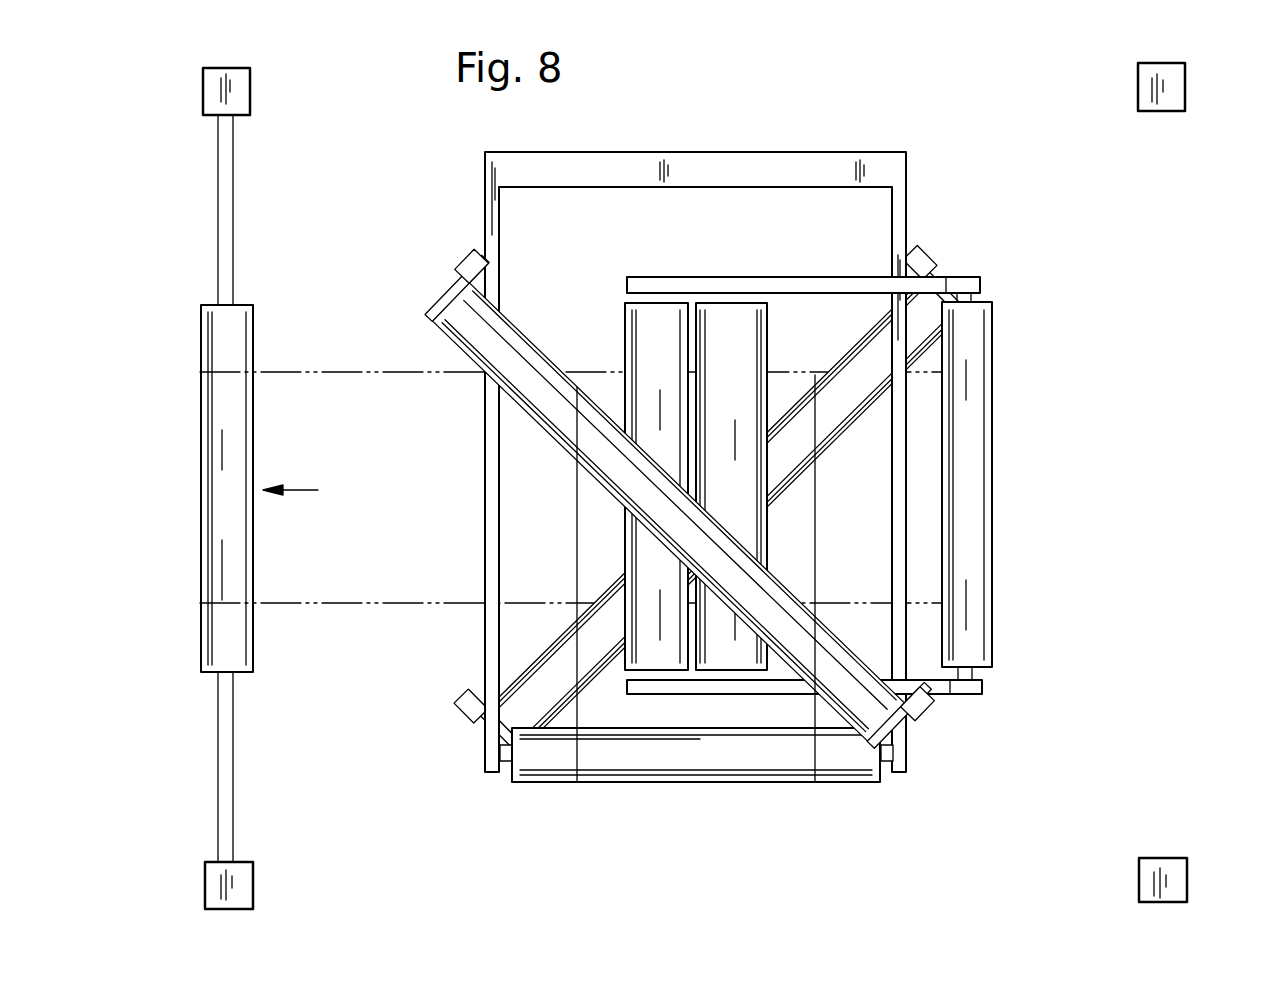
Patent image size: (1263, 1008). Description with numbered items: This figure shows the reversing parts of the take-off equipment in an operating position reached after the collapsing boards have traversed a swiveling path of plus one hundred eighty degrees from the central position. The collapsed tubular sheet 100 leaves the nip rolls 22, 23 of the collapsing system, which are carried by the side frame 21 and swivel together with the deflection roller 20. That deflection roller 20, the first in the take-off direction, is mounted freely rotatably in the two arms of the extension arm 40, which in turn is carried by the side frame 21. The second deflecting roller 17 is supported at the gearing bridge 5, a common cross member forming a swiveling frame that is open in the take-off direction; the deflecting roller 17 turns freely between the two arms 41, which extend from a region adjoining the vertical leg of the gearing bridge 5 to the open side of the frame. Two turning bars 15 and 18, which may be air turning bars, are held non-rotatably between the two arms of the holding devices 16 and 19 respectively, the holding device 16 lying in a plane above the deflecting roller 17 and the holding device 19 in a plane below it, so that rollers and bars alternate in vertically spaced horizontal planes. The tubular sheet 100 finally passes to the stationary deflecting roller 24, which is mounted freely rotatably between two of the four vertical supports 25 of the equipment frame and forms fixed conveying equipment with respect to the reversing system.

The gearing bridge 5 is at (718, 155).
The turning bar 15 is at (477, 336).
The holding device 16 is at (462, 268).
The deflecting roller 17 is at (697, 752).
The turning bar 18 is at (553, 674).
The holding device 19 is at (922, 262).
The deflection roller 20 is at (975, 344).
The side frame 21 is at (703, 272).
The nip roll 22 is at (648, 350).
The nip roll 23 is at (738, 352).
The deflecting roller 24 is at (243, 642).
The vertical supports 25 is at (235, 93).
The extension arm 40 is at (968, 287).
The arms 41 is at (490, 755).
The tubular sheet 100 is at (306, 390).